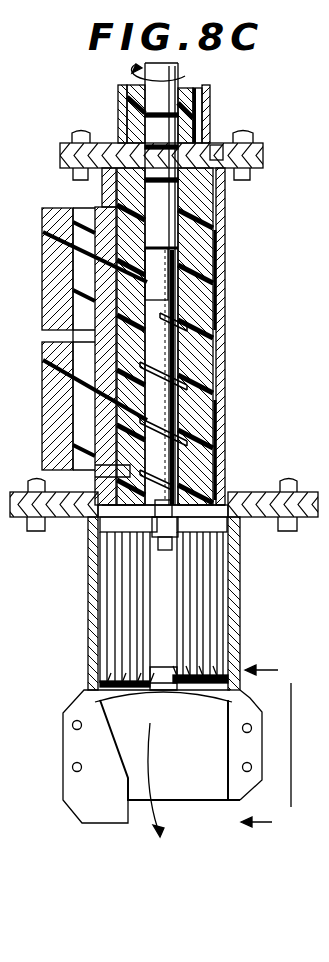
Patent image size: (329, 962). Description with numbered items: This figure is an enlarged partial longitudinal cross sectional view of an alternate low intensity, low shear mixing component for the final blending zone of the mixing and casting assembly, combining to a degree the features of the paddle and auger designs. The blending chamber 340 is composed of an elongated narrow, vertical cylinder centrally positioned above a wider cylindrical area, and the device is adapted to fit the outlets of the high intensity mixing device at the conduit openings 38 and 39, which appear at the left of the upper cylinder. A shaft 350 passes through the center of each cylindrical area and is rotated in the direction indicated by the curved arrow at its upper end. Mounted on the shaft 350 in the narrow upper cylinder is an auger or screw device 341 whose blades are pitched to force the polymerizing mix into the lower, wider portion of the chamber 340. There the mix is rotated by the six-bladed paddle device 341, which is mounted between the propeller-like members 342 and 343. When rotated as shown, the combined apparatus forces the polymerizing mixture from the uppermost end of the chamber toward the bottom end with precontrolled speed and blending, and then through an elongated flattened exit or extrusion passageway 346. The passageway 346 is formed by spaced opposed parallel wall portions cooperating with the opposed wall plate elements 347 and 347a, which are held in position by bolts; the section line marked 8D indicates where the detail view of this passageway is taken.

The shaft 350 is at (178, 70).
The blending chamber 340 is at (182, 412).
The auger or screw device 341 is at (198, 368).
The propeller-like member 342 is at (213, 530).
The propeller-like member 343 is at (217, 679).
The extrusion passageway 346 is at (200, 767).
The wall plate element 347 is at (107, 800).
The wall plate element 347a is at (237, 735).
The conduit opening 38 is at (71, 403).
The conduit opening 39 is at (68, 270).
The section line 8D is at (275, 749).